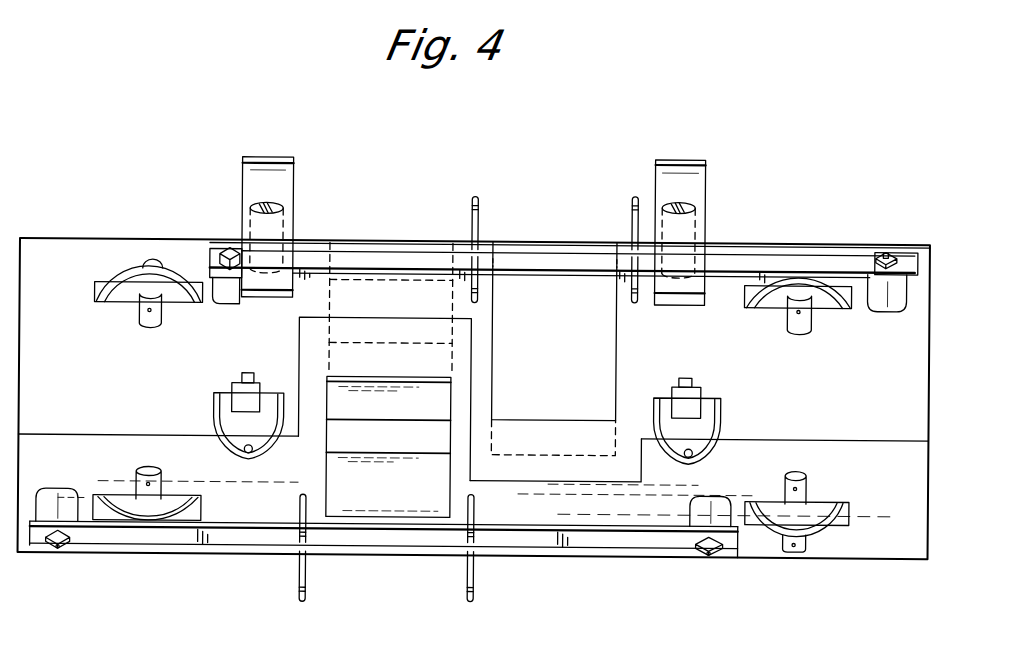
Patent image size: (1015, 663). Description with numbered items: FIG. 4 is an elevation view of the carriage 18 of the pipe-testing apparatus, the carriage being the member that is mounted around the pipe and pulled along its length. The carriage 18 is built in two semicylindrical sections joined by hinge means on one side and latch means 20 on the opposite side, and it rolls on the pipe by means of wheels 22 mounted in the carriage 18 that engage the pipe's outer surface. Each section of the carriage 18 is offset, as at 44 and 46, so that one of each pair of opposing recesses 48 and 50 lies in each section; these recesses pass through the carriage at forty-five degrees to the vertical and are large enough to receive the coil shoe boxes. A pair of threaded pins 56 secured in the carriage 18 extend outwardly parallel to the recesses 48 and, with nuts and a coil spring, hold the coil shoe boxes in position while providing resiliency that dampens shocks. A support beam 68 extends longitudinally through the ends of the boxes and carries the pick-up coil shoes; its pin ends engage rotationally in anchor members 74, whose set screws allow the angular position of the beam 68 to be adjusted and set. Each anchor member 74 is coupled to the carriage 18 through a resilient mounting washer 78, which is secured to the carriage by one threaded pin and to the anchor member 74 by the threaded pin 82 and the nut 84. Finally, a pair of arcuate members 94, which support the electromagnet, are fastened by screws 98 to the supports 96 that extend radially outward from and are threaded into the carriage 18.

The carriage 18 is at (930, 346).
The latch means 20 is at (224, 393).
The wheels 22 is at (830, 304).
The offset 44 is at (582, 480).
The offset 46 is at (300, 316).
The recesses 48 is at (332, 403).
The recesses 50 is at (617, 327).
The threaded pins 56 is at (478, 197).
The support beam 68 is at (786, 258).
The anchor members 74 is at (918, 263).
The resilient mounting washer 78 is at (907, 292).
The threaded pin 82 is at (887, 246).
The nut 84 is at (897, 250).
The arcuate members 94 is at (266, 155).
The supports 96 is at (244, 228).
The screws 98 is at (276, 210).